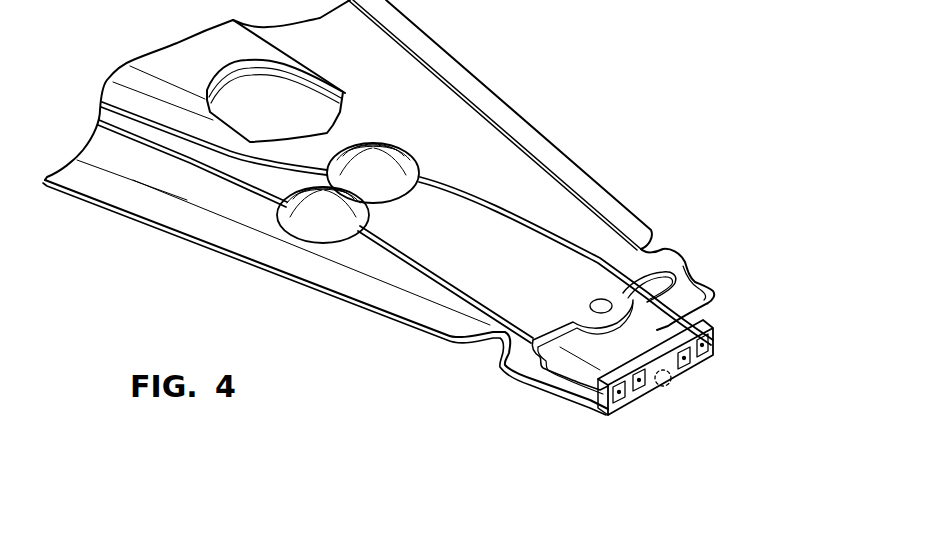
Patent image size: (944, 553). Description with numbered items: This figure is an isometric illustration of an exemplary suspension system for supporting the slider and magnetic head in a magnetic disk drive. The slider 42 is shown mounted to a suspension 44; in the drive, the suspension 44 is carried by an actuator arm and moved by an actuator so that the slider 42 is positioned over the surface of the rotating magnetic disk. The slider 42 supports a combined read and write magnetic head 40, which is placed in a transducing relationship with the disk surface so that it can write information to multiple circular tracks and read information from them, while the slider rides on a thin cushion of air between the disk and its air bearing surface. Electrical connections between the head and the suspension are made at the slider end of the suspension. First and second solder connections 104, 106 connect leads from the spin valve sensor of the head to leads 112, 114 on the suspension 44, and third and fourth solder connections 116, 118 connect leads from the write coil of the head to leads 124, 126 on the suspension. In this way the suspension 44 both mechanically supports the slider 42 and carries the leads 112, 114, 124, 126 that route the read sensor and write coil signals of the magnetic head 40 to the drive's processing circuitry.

The magnetic head 40 is at (682, 393).
The slider 42 is at (558, 403).
The suspension 44 is at (531, 165).
The first solder connection 104 is at (597, 410).
The second solder connection 106 is at (706, 348).
The lead 112 is at (393, 258).
The lead 114 is at (573, 243).
The third solder connection 116 is at (638, 390).
The fourth solder connection 118 is at (688, 365).
The lead 124 is at (438, 270).
The lead 126 is at (497, 212).